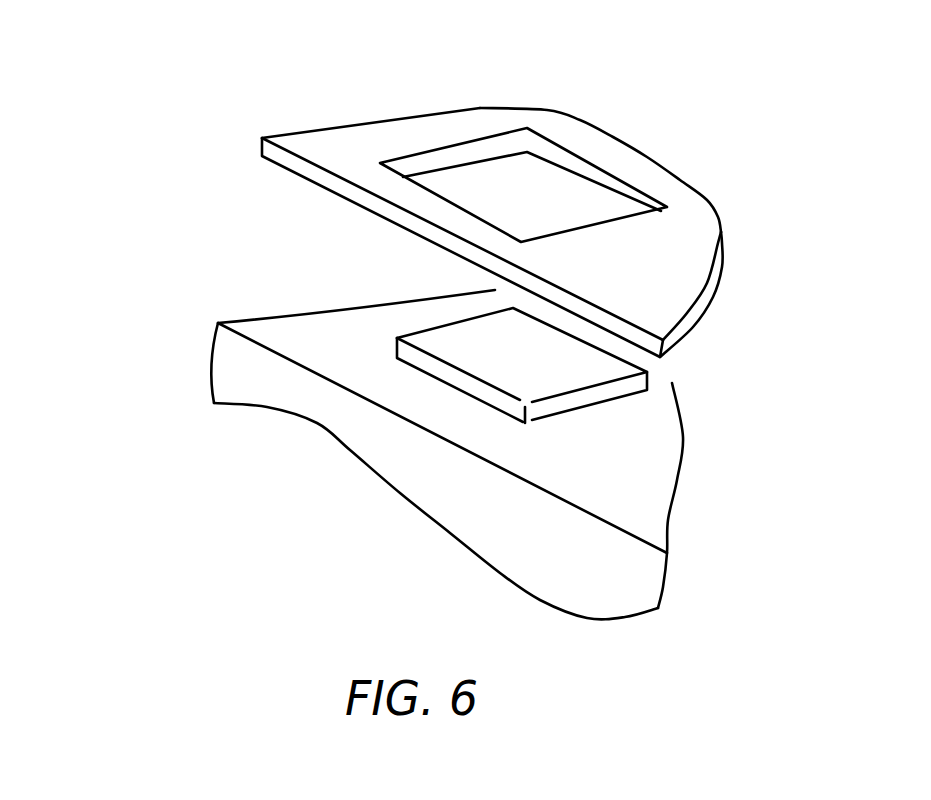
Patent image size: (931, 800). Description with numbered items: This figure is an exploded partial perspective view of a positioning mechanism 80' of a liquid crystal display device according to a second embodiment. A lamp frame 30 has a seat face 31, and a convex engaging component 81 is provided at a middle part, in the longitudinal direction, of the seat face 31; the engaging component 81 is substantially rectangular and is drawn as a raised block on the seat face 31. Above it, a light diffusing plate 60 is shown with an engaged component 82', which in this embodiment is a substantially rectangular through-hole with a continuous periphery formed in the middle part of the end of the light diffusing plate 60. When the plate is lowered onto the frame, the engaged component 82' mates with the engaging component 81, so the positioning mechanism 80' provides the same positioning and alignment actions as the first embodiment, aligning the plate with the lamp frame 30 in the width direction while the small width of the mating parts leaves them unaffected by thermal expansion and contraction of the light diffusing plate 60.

The lamp frame 30 is at (227, 372).
The seat face 31 is at (297, 333).
The light diffusing plate 60 is at (328, 142).
The positioning mechanism 80' is at (410, 226).
The engaging component 81 is at (438, 340).
The engaged component 82' is at (523, 135).